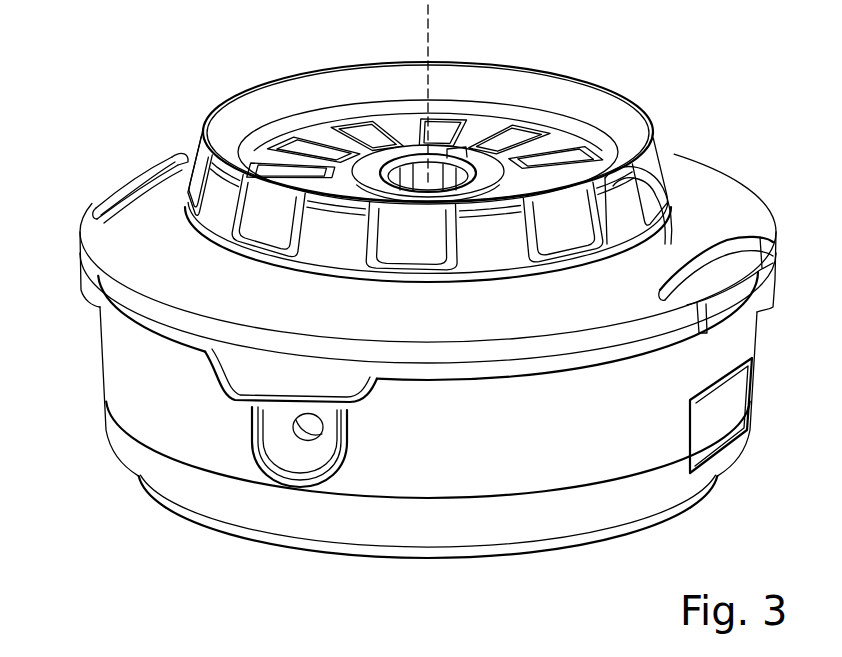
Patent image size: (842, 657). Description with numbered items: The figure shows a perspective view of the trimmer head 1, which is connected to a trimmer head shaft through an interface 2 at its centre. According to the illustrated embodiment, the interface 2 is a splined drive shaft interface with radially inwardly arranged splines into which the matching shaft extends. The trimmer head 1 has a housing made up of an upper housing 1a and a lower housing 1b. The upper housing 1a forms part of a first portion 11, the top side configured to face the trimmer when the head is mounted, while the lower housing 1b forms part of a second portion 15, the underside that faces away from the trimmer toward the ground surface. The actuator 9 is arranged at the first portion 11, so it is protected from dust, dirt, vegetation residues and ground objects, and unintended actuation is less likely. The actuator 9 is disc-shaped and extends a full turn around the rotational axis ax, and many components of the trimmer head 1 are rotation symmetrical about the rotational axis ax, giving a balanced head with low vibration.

The trimmer head 1 is at (401, 290).
The upper housing 1a is at (409, 234).
The lower housing 1b is at (392, 423).
The interface 2 is at (456, 156).
The actuator 9 is at (628, 207).
The first portion 11 is at (695, 215).
The second portion 15 is at (285, 548).
The rotational axis ax is at (427, 33).